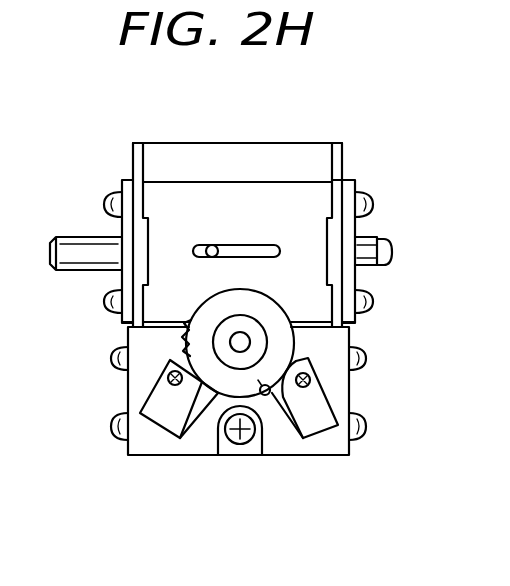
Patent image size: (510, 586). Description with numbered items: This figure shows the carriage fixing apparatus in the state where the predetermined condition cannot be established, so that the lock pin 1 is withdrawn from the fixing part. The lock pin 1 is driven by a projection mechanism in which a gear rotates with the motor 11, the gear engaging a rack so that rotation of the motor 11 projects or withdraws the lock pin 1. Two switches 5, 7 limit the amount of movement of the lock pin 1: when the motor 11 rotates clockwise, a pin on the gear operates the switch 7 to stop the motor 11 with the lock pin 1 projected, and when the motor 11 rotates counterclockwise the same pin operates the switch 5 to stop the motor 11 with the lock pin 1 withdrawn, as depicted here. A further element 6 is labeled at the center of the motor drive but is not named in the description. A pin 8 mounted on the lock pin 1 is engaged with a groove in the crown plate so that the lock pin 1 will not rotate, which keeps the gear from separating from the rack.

The lock pin 1 is at (392, 247).
The switch 5 is at (318, 422).
The pulley shaft 6 is at (240, 342).
The switch 7 is at (165, 418).
The pin 8 is at (212, 246).
The motor 11 is at (236, 378).